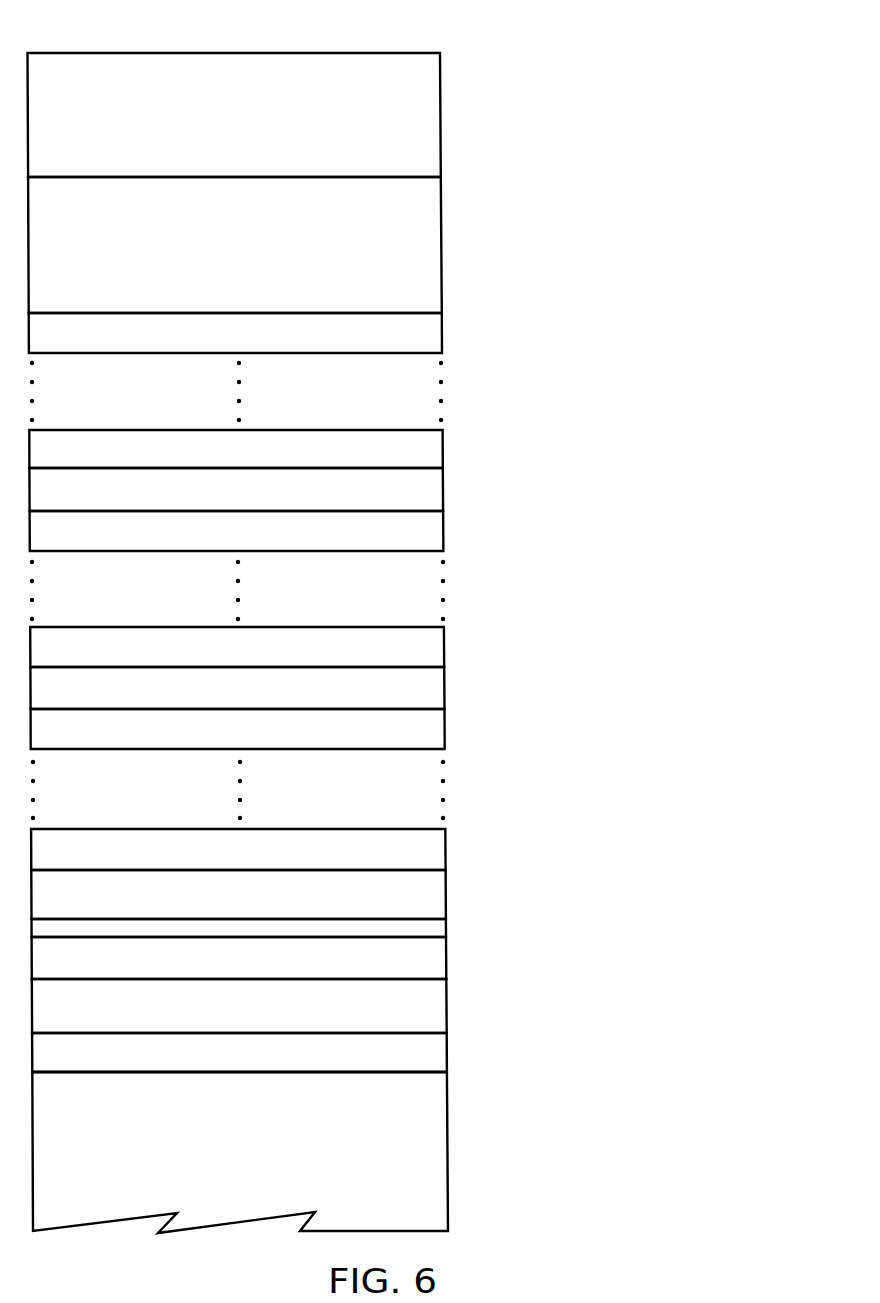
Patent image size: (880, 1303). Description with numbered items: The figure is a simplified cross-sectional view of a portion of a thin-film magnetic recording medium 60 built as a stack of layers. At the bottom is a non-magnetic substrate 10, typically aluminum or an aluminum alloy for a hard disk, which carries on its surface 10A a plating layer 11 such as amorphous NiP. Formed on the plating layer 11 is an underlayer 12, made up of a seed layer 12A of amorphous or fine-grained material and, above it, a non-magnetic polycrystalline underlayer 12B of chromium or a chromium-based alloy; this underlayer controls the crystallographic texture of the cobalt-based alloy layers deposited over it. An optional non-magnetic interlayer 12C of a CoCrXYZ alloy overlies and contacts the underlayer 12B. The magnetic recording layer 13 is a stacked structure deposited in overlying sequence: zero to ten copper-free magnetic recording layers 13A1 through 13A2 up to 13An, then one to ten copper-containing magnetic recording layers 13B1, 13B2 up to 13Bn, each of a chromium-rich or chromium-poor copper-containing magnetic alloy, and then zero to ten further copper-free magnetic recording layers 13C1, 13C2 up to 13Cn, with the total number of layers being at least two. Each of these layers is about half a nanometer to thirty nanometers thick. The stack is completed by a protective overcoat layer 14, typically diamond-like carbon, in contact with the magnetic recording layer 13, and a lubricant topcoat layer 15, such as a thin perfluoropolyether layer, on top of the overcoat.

The thin-film magnetic recording medium 60 is at (414, 617).
The lubricant topcoat layer 15 is at (441, 104).
The protective overcoat layer 14 is at (442, 239).
The magnetic recording layer 13 is at (365, 616).
The Cu-free magnetic recording layer 13Cn is at (442, 326).
The Cu-free magnetic recording layer 13C2 is at (443, 445).
The Cu-free magnetic recording layer 13C1 is at (444, 487).
The Cu-containing magnetic recording layer 13Bn is at (444, 528).
The Cu-containing magnetic recording layer 13B2 is at (444, 643).
The Cu-containing magnetic recording layer 13B1 is at (444, 683).
The Cu-free magnetic recording layer 13An is at (445, 724).
The Cu-free magnetic recording layer 13A2 is at (446, 848).
The Cu-free magnetic recording layer 13A1 is at (311, 894).
The non-magnetic interlayer 12C is at (446, 925).
The underlayer 12 is at (402, 985).
The polycrystalline underlayer 12B is at (446, 957).
The seed layer 12A is at (447, 1000).
The plating layer 11 is at (448, 1047).
The surface 10A is at (410, 1072).
The non-magnetic substrate 10 is at (448, 1149).